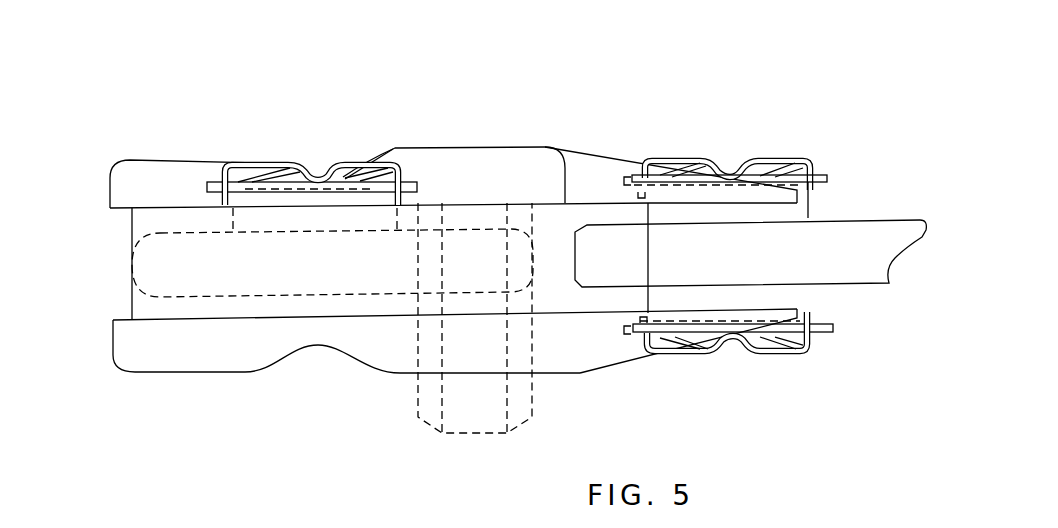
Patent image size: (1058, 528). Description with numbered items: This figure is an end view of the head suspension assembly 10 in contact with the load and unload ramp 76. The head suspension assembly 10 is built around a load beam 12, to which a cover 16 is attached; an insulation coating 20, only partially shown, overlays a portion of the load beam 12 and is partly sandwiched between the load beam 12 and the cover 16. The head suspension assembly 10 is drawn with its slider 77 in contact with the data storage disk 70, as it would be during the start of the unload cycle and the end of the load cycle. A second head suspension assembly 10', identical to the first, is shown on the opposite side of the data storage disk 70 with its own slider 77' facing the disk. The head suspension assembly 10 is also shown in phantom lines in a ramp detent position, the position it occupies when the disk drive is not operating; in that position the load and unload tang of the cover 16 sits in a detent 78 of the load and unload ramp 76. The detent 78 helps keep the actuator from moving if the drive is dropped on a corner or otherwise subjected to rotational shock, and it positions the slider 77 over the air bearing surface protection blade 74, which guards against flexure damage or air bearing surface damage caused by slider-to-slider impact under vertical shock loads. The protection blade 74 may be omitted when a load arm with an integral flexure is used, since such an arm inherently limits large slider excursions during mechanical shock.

The head suspension assembly 10 is at (574, 123).
The second head suspension assembly 10' is at (730, 364).
The load beam 12 is at (830, 172).
The cover 16 is at (700, 160).
The insulation coating 20 is at (783, 168).
The data storage disk 70 is at (867, 270).
The air bearing surface protection blade 74 is at (128, 286).
The load and unload ramp 76 is at (606, 165).
The slider 77 is at (710, 230).
The slider 77' is at (744, 336).
The detent 78 is at (297, 168).